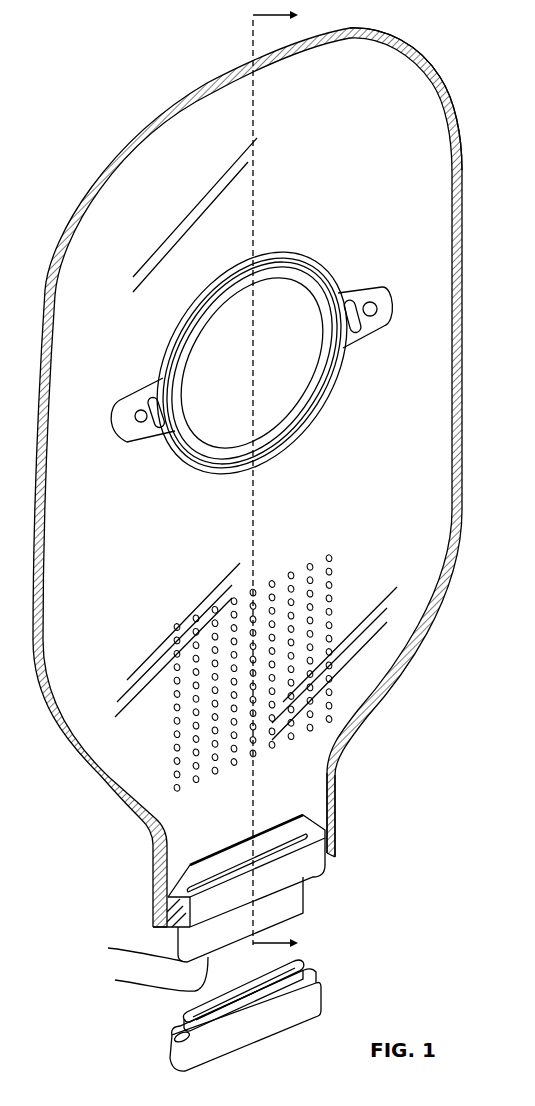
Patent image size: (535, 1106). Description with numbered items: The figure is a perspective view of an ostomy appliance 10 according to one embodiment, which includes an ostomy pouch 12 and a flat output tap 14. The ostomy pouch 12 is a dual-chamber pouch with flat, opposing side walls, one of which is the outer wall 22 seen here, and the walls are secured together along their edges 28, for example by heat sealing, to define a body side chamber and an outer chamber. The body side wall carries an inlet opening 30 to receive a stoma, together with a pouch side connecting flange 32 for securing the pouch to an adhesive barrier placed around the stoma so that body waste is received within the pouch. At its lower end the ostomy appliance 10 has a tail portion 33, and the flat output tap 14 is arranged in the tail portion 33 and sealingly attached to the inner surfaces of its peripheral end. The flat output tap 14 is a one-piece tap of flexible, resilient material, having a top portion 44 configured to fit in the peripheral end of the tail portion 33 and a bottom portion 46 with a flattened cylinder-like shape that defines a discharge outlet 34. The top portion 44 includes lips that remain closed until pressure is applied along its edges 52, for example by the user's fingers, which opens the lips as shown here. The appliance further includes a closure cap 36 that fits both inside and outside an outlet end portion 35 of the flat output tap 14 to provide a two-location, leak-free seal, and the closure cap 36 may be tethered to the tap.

The ostomy appliance 10 is at (118, 60).
The ostomy pouch 12 is at (423, 325).
The flat output tap 14 is at (279, 888).
The outer wall 22 is at (398, 434).
The edges 28 is at (433, 87).
The inlet opening 30 is at (253, 353).
The pouch side connecting flange 32 is at (303, 268).
The tail portion 33 is at (333, 805).
The discharge outlet 34 is at (148, 969).
The outlet end portion 35 is at (147, 929).
The closure cap 36 is at (318, 993).
The top portion 44 is at (302, 864).
The bottom portion 46 is at (297, 913).
The edges 52 is at (341, 848).